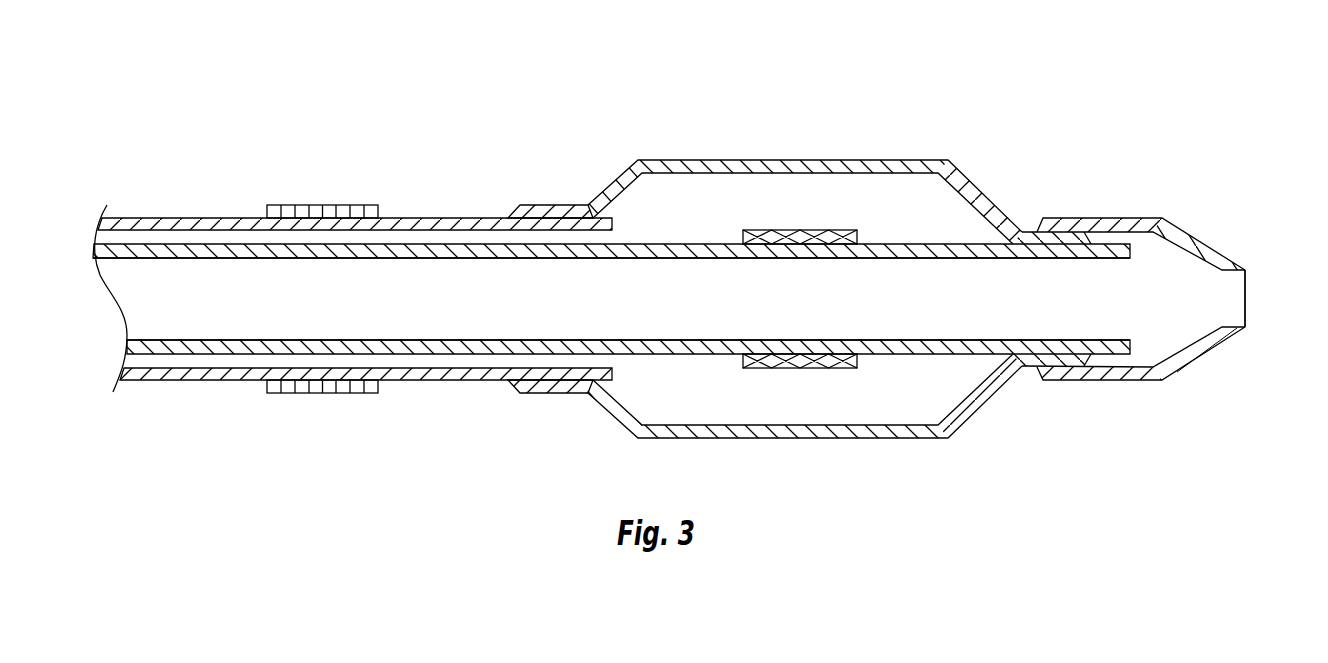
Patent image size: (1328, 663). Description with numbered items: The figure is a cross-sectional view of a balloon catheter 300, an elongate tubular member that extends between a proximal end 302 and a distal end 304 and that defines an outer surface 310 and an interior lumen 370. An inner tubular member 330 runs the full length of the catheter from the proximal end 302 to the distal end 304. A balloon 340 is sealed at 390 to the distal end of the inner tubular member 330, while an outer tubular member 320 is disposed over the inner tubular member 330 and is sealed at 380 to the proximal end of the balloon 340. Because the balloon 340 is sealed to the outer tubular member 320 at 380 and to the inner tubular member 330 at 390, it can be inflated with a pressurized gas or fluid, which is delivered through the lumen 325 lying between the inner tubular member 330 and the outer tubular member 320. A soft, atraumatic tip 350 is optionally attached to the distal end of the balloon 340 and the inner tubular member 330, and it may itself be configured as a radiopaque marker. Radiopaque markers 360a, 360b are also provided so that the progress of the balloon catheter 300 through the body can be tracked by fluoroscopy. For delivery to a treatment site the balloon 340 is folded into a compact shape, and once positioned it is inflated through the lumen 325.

The balloon catheter 300 is at (691, 78).
The proximal end 302 is at (133, 297).
The distal end 304 is at (1237, 293).
The outer surface 310 is at (174, 186).
The outer tubular member 320 is at (243, 218).
The lumen 325 is at (558, 358).
The inner tubular member 330 is at (431, 245).
The balloon 340 is at (807, 168).
The soft, atraumatic tip 350 is at (1123, 228).
The radiopaque marker 360a is at (330, 388).
The radiopaque marker 360b is at (794, 363).
The interior lumen 370 is at (585, 308).
The seal 380 is at (557, 214).
The seal 390 is at (1057, 232).